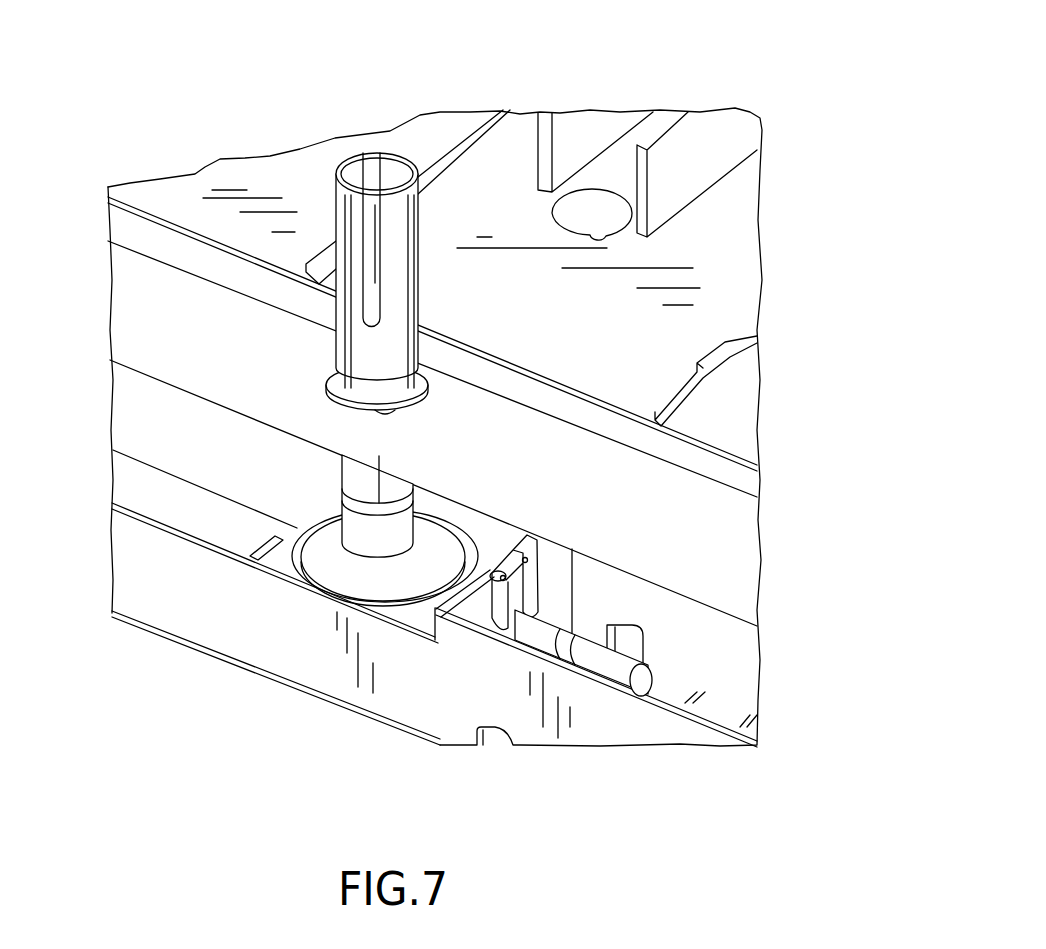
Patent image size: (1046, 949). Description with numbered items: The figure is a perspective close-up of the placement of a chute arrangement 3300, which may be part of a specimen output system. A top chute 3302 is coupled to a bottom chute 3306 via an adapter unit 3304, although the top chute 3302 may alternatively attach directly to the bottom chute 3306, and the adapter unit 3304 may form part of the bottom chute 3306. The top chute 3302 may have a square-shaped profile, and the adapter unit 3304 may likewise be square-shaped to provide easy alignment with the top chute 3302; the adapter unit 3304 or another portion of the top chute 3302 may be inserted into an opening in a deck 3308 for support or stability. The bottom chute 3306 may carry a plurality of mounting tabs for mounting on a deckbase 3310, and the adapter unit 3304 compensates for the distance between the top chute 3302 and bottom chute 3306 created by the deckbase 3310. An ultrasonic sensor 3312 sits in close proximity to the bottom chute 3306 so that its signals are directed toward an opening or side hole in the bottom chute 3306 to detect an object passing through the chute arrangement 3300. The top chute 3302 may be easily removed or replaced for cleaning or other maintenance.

The chute arrangement 3300 is at (612, 62).
The top chute 3302 is at (340, 230).
The adapter unit 3304 is at (357, 478).
The bottom chute 3306 is at (425, 560).
The deck 3308 is at (500, 432).
The deckbase 3310 is at (193, 517).
The ultrasonic sensor 3312 is at (557, 642).